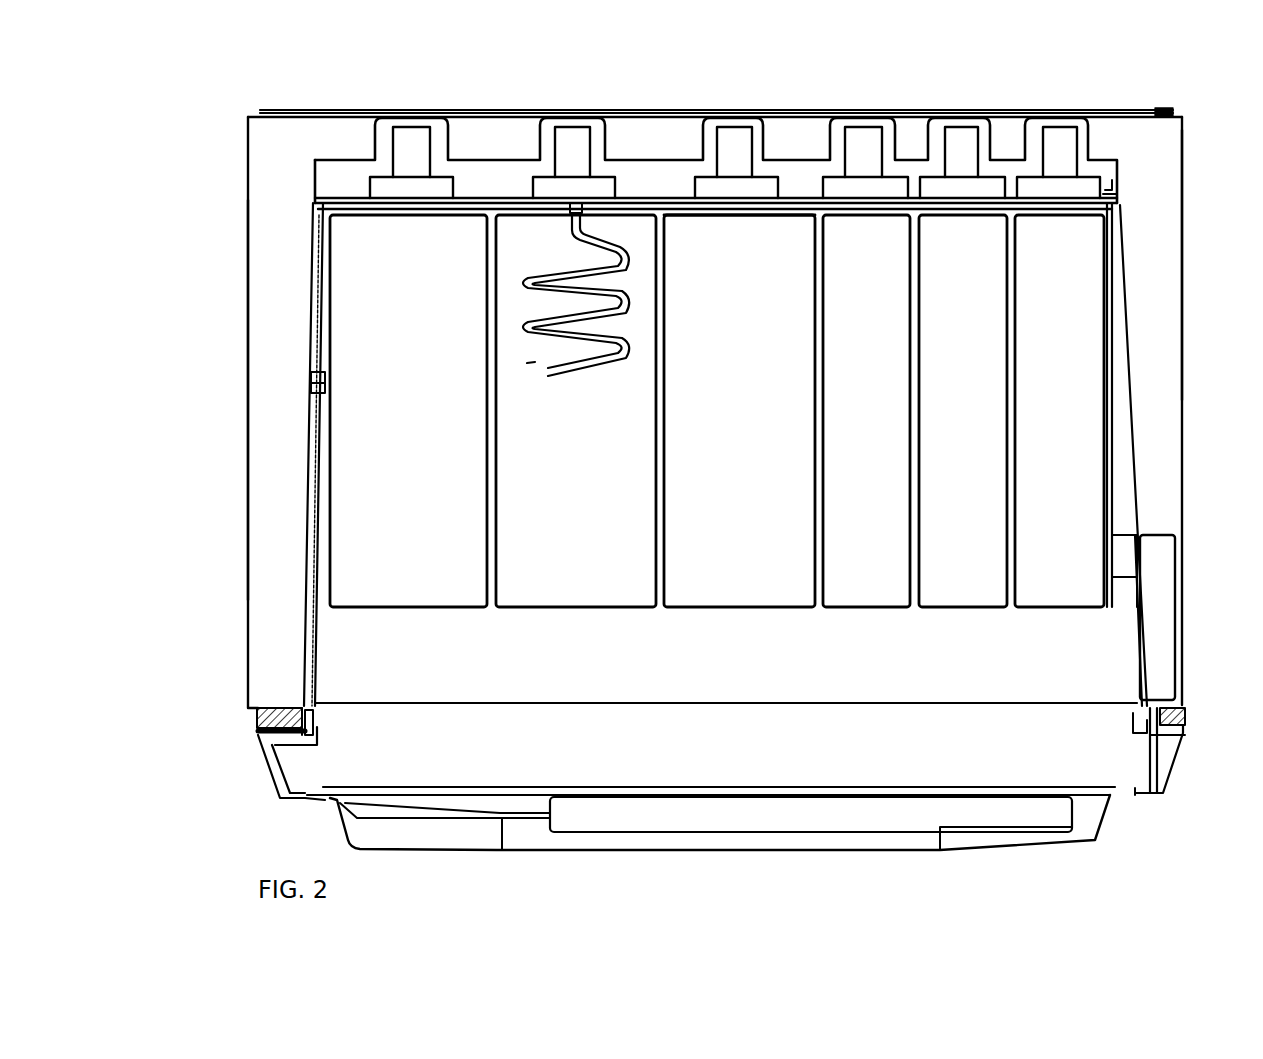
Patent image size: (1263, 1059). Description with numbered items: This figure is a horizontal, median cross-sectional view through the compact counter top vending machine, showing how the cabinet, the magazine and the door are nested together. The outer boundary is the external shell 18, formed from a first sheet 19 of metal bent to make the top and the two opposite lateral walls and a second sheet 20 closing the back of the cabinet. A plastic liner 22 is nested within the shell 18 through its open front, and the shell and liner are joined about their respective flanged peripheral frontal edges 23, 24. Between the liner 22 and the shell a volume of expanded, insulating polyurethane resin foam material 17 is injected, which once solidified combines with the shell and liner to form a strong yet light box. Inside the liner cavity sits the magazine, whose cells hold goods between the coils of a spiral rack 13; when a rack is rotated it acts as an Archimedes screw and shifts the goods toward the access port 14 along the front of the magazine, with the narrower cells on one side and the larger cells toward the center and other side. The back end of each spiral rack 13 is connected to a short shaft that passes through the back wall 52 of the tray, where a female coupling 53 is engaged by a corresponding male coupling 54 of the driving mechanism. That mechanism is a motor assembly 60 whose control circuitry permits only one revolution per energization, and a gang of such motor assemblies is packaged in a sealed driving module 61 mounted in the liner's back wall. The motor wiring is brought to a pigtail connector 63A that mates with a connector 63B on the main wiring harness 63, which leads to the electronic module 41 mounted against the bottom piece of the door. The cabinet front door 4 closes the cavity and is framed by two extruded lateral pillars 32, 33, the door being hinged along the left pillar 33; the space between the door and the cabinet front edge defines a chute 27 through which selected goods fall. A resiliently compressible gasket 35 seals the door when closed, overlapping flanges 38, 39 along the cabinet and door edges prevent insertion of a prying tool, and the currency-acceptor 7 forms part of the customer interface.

The cabinet front door 4 is at (1135, 797).
The currency-acceptor 7 is at (1165, 567).
The spiral rack 13 is at (620, 357).
The access port 14 is at (574, 596).
The insulating polyurethane resin foam material 17 is at (248, 243).
The external shell 18 is at (1183, 137).
The first sheet 19 is at (248, 376).
The second sheet 20 is at (742, 110).
The plastic liner 22 is at (336, 160).
The flanged peripheral frontal edge of shell 23 is at (257, 716).
The flanged peripheral frontal edge of liner 24 is at (285, 703).
The chute 27 is at (734, 686).
The right lateral pillar 32 is at (1178, 765).
The left lateral pillar 33 is at (272, 780).
The resiliently compressible gasket 35 is at (1185, 716).
The overlapping flange 38 is at (318, 705).
The overlapping flange 39 is at (320, 727).
The electronic module 41 is at (998, 806).
The back wall of tray 52 is at (801, 213).
The female coupling 53 is at (563, 220).
The male coupling 54 is at (578, 208).
The motor assembly 60 is at (578, 133).
The sealed driving module 61 is at (1117, 192).
The main wiring harness 63 is at (328, 541).
The pigtail connector 63A is at (325, 372).
The connector 63B is at (325, 394).